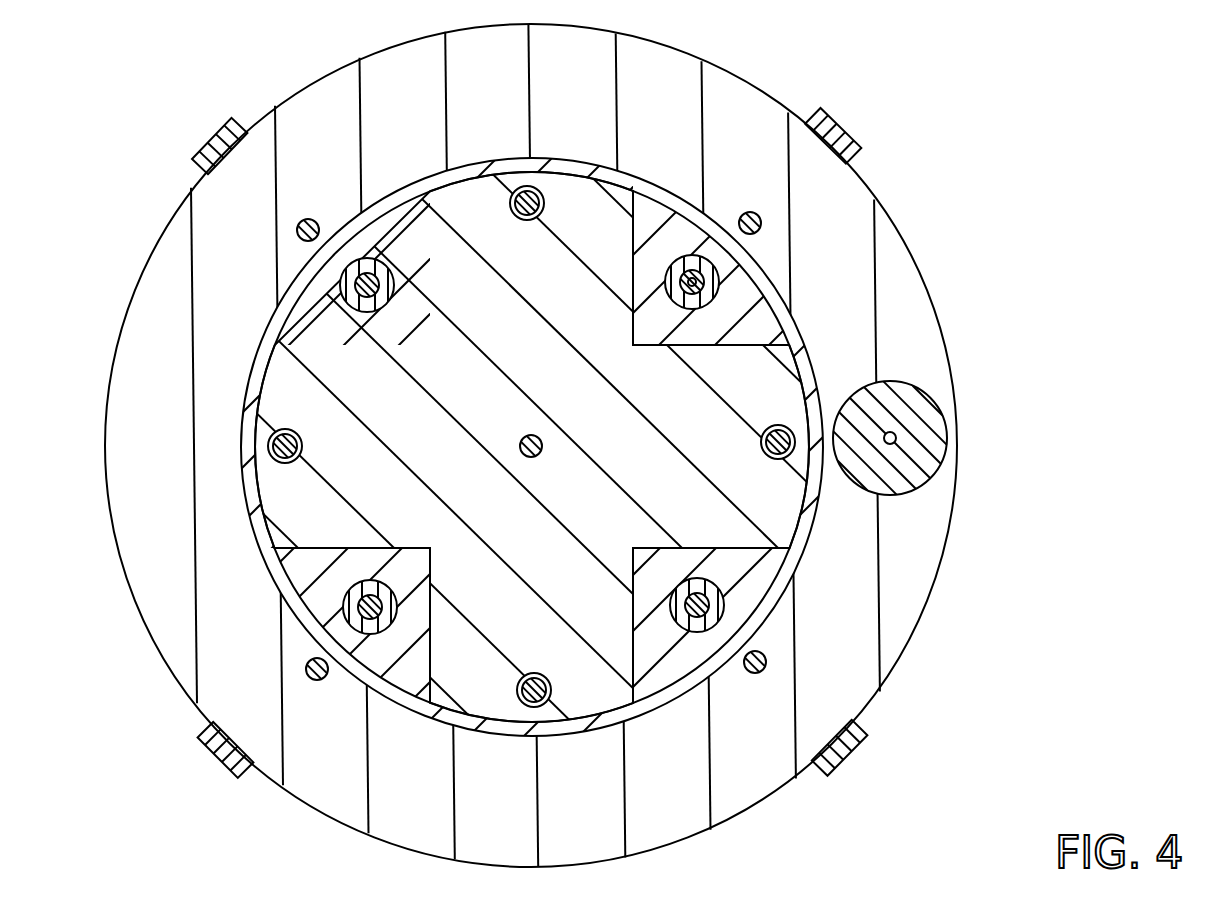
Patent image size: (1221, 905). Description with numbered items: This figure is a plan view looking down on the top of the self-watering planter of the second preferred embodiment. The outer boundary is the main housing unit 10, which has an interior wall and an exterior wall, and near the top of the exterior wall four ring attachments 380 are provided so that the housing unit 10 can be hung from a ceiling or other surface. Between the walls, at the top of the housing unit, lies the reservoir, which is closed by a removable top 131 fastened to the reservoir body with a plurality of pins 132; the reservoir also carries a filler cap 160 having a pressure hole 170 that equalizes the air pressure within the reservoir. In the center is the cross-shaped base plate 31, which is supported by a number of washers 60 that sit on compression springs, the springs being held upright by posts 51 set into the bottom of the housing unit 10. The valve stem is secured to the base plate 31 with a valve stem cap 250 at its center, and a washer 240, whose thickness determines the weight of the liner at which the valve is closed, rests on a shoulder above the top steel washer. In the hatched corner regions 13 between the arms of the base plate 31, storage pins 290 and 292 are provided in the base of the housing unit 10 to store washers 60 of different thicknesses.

The main housing unit 10 is at (927, 295).
The corner block 13 is at (610, 450).
The base plate 31 is at (588, 450).
The posts 51 is at (545, 206).
The washers 60 is at (341, 290).
The removable top 131 is at (535, 445).
The pins 132 is at (311, 219).
The filler cap 160 is at (930, 465).
The pressure hole 170 is at (896, 437).
The washer 240 is at (634, 320).
The valve stem cap 250 is at (542, 455).
The storage pins 290 is at (368, 275).
The storage pins 292 is at (692, 278).
The ring attachments 380 is at (215, 135).